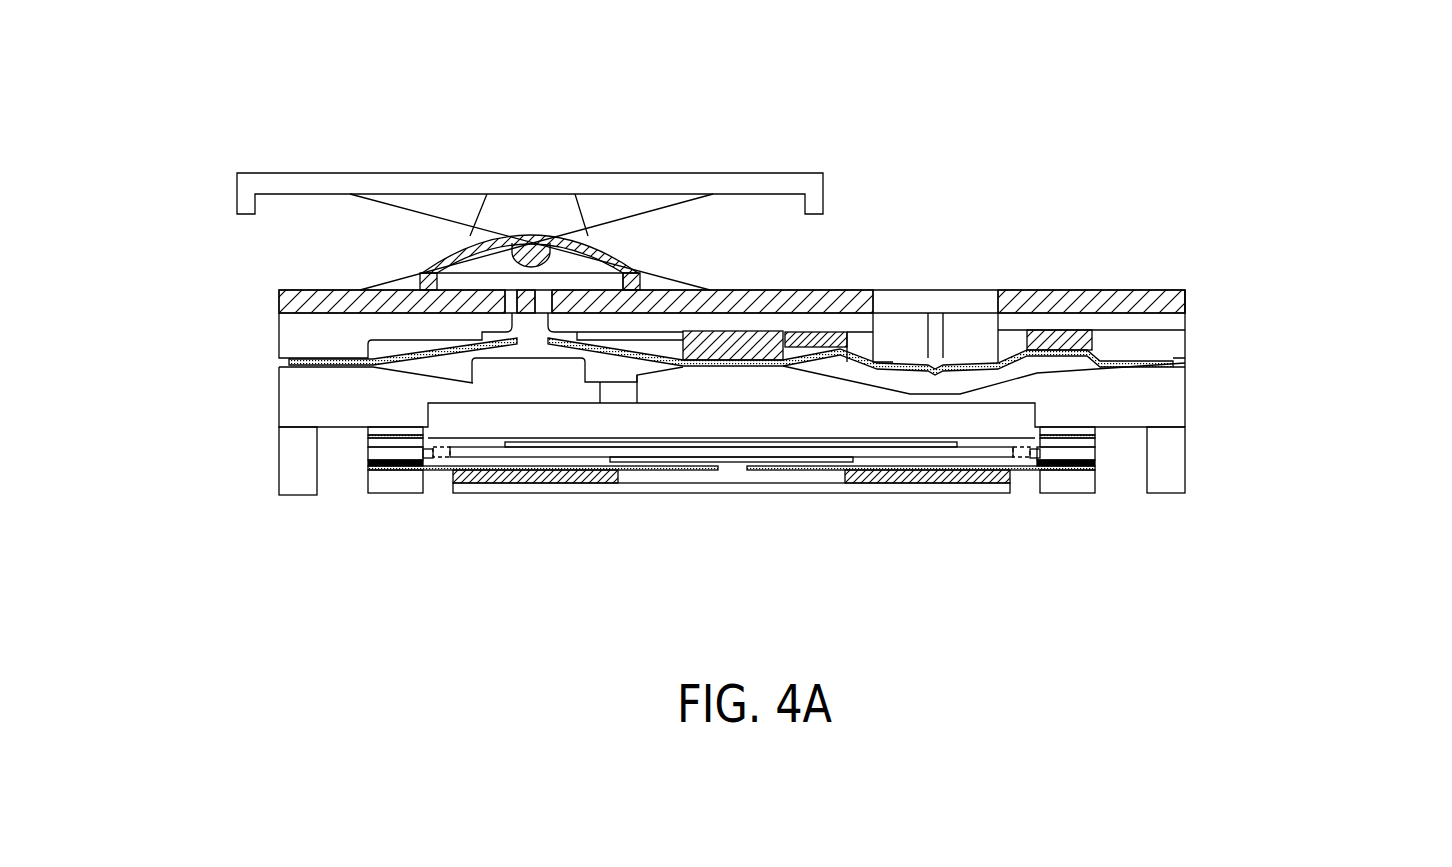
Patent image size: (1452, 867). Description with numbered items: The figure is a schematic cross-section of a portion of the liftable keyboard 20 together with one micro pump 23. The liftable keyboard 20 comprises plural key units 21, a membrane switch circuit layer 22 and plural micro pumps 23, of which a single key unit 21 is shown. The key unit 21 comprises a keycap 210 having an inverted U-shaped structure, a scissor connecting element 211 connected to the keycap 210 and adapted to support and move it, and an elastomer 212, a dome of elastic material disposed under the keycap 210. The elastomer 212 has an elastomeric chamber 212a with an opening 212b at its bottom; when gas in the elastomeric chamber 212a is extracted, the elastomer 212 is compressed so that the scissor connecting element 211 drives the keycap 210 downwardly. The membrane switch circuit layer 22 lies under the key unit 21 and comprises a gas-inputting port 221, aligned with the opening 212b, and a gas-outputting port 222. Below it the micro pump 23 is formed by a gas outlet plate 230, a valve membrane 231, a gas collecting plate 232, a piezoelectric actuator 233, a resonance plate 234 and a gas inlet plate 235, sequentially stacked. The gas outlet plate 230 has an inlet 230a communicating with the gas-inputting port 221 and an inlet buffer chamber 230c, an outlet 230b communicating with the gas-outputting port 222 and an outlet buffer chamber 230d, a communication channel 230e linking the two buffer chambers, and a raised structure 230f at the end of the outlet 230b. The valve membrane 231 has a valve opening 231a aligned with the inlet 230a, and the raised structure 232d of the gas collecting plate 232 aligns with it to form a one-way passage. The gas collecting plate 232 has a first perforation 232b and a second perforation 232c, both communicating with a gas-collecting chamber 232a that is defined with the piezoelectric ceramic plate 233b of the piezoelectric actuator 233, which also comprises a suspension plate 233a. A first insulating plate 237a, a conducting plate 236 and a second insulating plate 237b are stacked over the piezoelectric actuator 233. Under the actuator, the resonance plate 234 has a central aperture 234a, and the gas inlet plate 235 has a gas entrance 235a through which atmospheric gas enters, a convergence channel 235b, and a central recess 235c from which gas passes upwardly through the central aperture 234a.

The liftable keyboard 20 is at (1304, 68).
The key unit 21 is at (856, 132).
The keycap 210 is at (757, 182).
The scissor connecting element 211 is at (713, 199).
The elastomer 212 is at (626, 258).
The elastomeric chamber 212a is at (571, 259).
The opening 212b is at (558, 313).
The membrane switch circuit layer 22 is at (1190, 296).
The gas-inputting port 221 is at (508, 300).
The gas-outputting port 222 is at (967, 305).
The micro pump 23 is at (1345, 333).
The gas outlet plate 230 is at (1163, 338).
The inlet 230a is at (507, 314).
The outlet 230b is at (937, 348).
The inlet buffer chamber 230c is at (506, 331).
The outlet buffer chamber 230d is at (1014, 342).
The communication channel 230e is at (746, 363).
The raised structure 230f is at (975, 345).
The valve membrane 231 is at (1181, 364).
The valve opening 231a is at (535, 356).
The gas collecting plate 232 is at (1161, 402).
The gas-collecting chamber 232a is at (675, 421).
The first perforation 232b is at (620, 393).
The second perforation 232c is at (1100, 417).
The raised structure 232d is at (488, 366).
The piezoelectric actuator 233 is at (1278, 470).
The suspension plate 233a is at (1012, 470).
The piezoelectric ceramic plate 233b is at (1094, 448).
The resonance plate 234 is at (1078, 495).
The central aperture 234a is at (737, 481).
The gas inlet plate 235 is at (1012, 495).
The gas entrance 235a is at (437, 484).
The convergence channel 235b is at (501, 485).
The central recess 235c is at (827, 481).
The conducting plate 236 is at (395, 437).
The first insulating plate 237a is at (383, 429).
The second insulating plate 237b is at (397, 443).